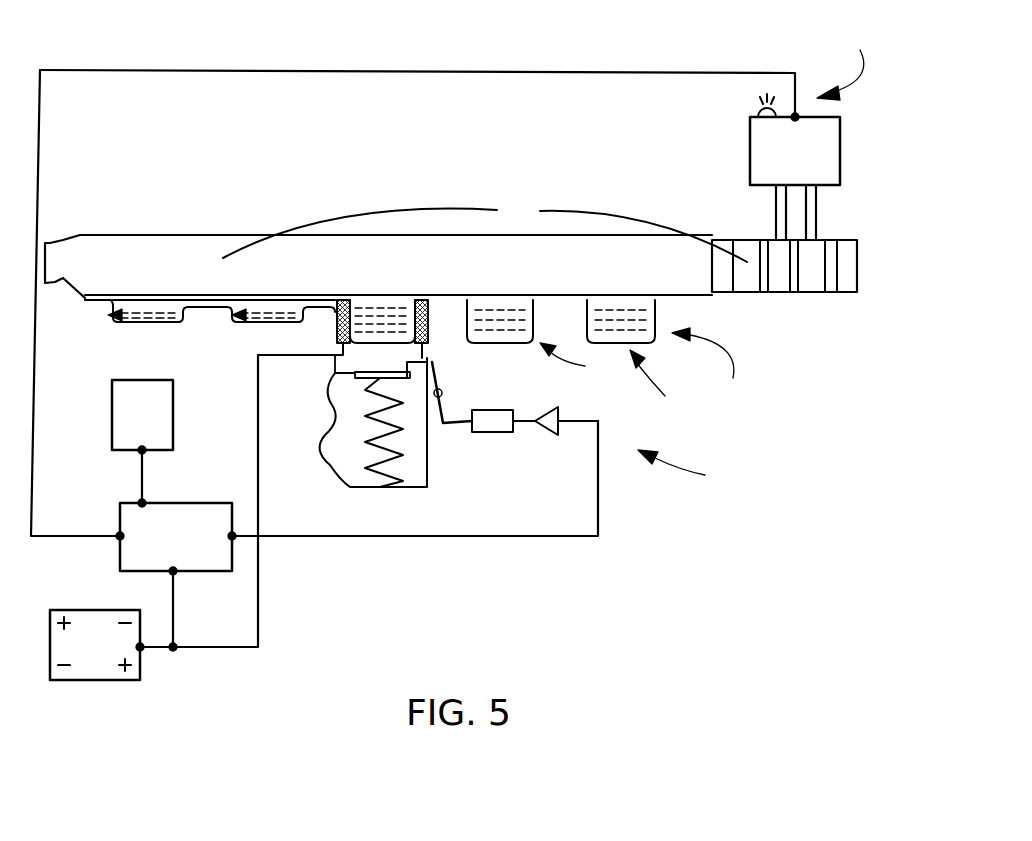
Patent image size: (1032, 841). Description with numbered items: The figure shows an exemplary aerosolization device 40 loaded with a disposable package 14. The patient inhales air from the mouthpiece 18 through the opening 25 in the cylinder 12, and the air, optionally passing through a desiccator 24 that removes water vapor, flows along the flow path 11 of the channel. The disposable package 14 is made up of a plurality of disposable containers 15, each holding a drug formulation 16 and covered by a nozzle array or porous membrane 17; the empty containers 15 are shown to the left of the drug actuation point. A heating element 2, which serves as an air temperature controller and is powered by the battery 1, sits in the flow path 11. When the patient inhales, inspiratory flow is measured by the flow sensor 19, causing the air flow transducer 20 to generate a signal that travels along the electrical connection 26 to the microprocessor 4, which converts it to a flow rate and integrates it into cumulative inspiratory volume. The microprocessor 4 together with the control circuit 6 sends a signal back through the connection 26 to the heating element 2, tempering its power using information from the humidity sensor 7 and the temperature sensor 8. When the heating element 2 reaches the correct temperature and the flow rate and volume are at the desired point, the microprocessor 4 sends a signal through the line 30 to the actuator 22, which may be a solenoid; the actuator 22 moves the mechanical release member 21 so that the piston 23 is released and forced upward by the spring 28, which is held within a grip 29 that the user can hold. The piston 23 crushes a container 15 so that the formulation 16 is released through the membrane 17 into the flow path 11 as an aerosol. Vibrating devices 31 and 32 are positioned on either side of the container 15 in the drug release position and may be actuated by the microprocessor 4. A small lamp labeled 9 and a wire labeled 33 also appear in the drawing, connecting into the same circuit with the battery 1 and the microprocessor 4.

The power source 1 is at (120, 608).
The heating element 2 is at (723, 293).
The microprocessor 4 is at (176, 577).
The control circuit 6 is at (142, 443).
The hygrometer/temperature sensor 7 is at (760, 293).
The temperature sensor 8 is at (790, 293).
The indicator lamp 9 is at (757, 110).
The flow path 11 is at (617, 253).
The cylinder 12 is at (160, 233).
The disposable package 14 is at (708, 367).
The disposable containers 15 is at (140, 323).
The drug formulation 16 is at (608, 317).
The porous membrane 17 is at (377, 303).
The mouthpiece 18 is at (55, 233).
The flow sensor 19 is at (844, 61).
The air flow transducer 20 is at (430, 440).
The mechanical release member 21 is at (440, 380).
The actuator 22 is at (492, 432).
The piston 23 is at (355, 374).
The desiccator 24 is at (847, 252).
The opening 25 is at (857, 292).
The electrical connection 26 is at (440, 70).
The spring 28 is at (393, 487).
The grip 29 is at (320, 440).
The line 30 is at (420, 537).
The vibrating device 31 is at (337, 312).
The vibrating device 32 is at (428, 318).
The wire 33 is at (258, 607).
The device 40 is at (687, 469).